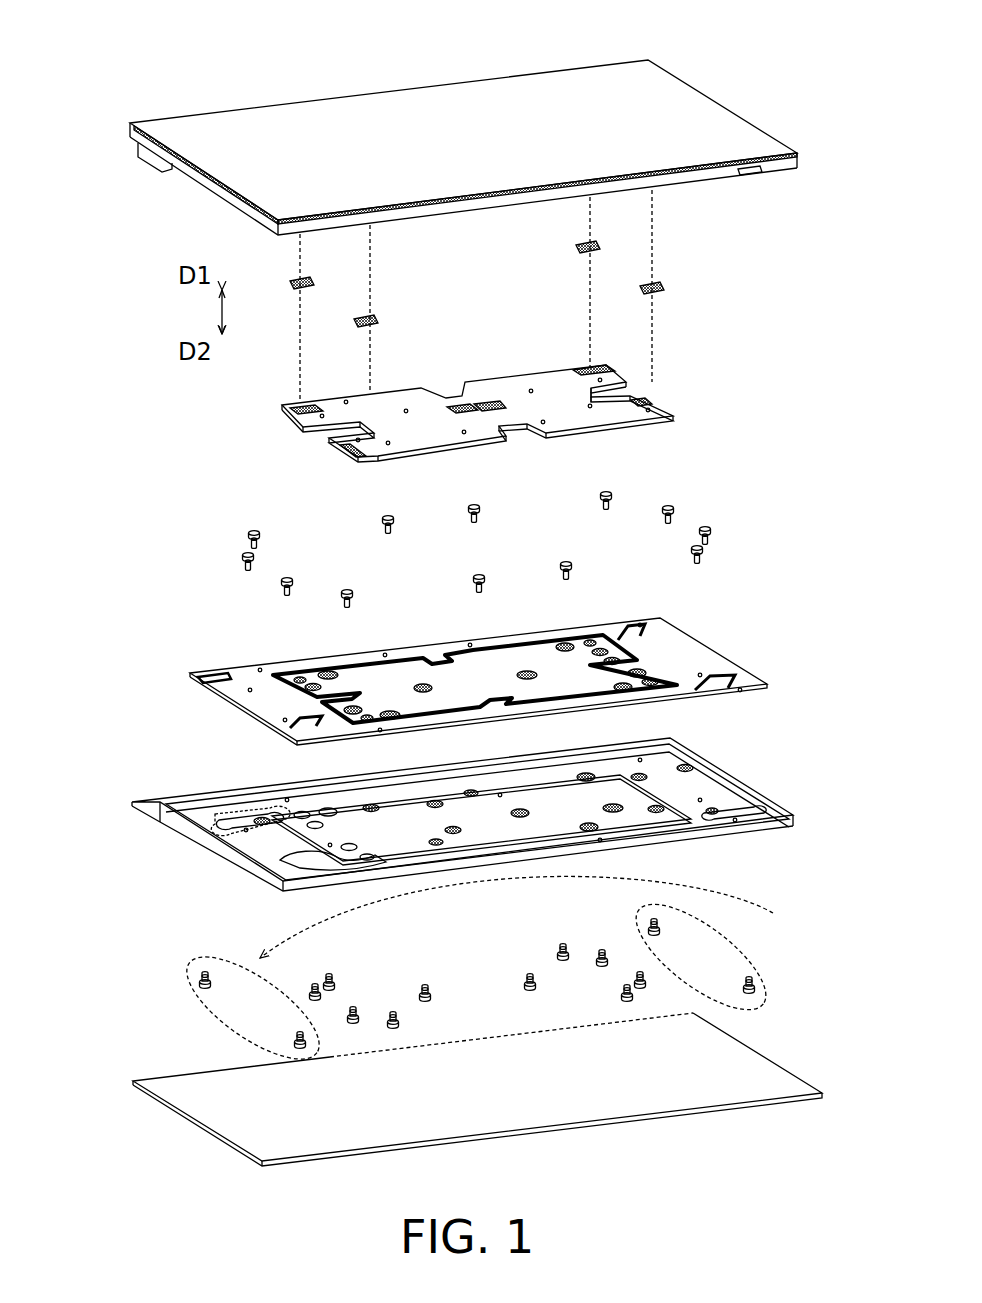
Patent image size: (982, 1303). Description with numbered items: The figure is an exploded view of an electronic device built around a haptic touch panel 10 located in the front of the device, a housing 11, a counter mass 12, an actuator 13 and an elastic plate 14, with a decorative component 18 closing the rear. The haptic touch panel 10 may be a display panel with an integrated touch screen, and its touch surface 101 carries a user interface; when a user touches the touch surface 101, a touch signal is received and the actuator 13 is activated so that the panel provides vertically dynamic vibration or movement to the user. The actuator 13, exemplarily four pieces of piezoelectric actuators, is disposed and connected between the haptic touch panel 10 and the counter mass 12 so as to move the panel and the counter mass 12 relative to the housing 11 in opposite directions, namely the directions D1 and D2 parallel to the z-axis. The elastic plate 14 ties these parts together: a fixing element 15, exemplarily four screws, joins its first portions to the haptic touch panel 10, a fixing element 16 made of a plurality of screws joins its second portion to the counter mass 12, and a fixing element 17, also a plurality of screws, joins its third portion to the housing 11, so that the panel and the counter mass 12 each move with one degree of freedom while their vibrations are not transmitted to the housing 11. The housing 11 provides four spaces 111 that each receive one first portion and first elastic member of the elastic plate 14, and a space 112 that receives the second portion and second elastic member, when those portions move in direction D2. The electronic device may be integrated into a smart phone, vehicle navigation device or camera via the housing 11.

The haptic touch panel 10 is at (435, 214).
The touch surface 101 is at (467, 104).
The housing 11 is at (446, 807).
The spaces 111 is at (242, 812).
The space 112 is at (470, 810).
The counter mass 12 is at (507, 388).
The actuator 13 is at (706, 286).
The elastic plate 14 is at (237, 711).
The fixing element 15 is at (727, 926).
The fixing element 16 is at (680, 998).
The fixing element 17 is at (722, 510).
The decorative component 18 is at (200, 1128).